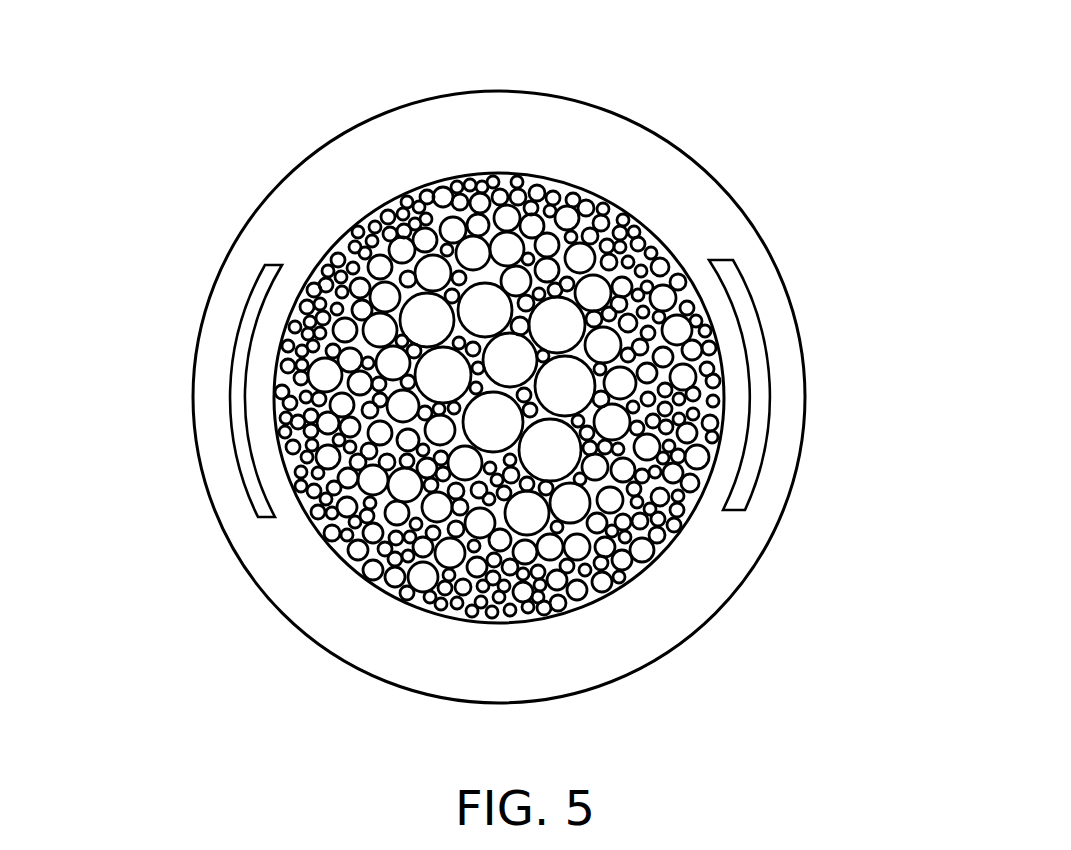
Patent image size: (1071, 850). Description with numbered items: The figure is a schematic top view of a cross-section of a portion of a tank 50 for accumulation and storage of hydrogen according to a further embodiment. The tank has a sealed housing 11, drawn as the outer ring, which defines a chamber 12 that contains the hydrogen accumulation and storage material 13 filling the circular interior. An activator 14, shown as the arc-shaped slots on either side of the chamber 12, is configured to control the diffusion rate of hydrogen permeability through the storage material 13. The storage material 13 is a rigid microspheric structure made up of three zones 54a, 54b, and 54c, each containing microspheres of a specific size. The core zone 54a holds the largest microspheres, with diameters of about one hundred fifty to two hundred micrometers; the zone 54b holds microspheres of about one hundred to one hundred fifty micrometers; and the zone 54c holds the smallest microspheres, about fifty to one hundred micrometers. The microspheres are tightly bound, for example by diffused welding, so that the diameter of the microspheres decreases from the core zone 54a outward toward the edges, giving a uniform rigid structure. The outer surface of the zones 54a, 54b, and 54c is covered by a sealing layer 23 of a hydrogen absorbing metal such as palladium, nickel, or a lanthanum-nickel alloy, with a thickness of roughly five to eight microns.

The tank 50 is at (212, 120).
The sealed housing 11 is at (723, 607).
The chamber 12 is at (315, 570).
The hydrogen accumulation and storage material 13 is at (560, 180).
The activator 14 is at (235, 398).
The sealing layer 23 is at (684, 520).
The core zone 54a is at (567, 322).
The zone 54b is at (680, 330).
The zone 54c is at (693, 430).